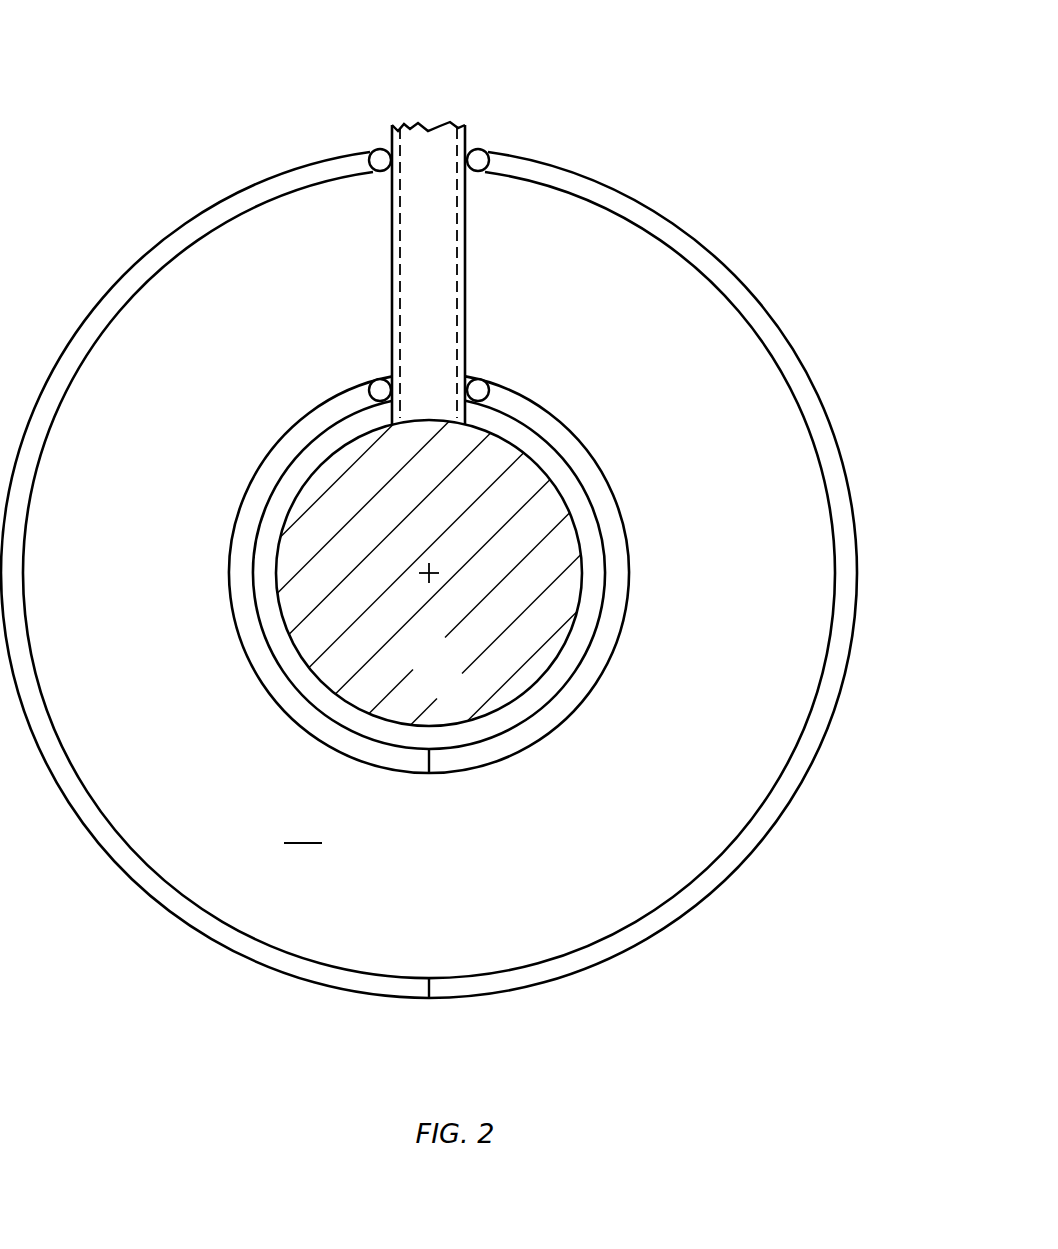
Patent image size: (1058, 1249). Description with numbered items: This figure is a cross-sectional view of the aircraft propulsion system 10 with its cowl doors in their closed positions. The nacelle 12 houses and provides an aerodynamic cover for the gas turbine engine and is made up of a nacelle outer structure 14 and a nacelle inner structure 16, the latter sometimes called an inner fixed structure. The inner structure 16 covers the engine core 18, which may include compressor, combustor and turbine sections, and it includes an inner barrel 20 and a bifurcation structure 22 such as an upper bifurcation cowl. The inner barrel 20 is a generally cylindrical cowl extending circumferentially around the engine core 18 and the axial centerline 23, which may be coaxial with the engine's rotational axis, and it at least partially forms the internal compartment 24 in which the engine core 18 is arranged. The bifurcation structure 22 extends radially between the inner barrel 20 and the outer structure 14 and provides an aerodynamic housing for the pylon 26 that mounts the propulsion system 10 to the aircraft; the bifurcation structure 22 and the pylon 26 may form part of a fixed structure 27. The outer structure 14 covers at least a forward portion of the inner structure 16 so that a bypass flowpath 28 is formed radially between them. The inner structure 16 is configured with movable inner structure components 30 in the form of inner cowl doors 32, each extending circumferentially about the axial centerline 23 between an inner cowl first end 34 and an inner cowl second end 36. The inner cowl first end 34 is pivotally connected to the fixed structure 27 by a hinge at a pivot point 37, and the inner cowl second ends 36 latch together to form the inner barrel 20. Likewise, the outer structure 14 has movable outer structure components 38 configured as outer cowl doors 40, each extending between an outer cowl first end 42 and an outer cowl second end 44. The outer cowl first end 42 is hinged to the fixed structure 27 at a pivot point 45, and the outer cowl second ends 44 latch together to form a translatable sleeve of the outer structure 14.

The aircraft propulsion system 10 is at (690, 88).
The nacelle 12 is at (717, 191).
The nacelle outer structure 14 is at (746, 277).
The nacelle inner structure 16 is at (582, 432).
The engine core 18 is at (580, 534).
The inner barrel 20 is at (429, 574).
The bifurcation structure 22 is at (471, 290).
The axial centerline 23 is at (430, 576).
The internal compartment 24 is at (592, 603).
The pylon 26 is at (400, 254).
The fixed structure 27 is at (428, 108).
The bypass flowpath 28 is at (303, 826).
The inner structure components 30 is at (257, 680).
The inner cowl doors 32 is at (604, 680).
The inner cowl first end 34 is at (377, 381).
The inner cowl second end 36 is at (428, 756).
The pivot point 37 is at (370, 383).
The outer structure components 38 is at (169, 229).
The outer cowl doors 40 is at (792, 334).
The outer cowl first end 42 is at (378, 148).
The outer cowl second end 44 is at (424, 985).
The pivot point 45 is at (380, 168).